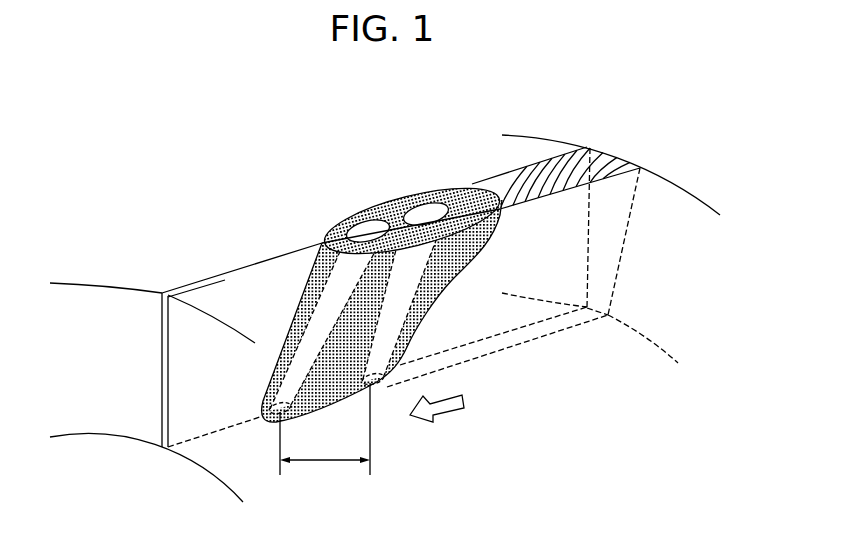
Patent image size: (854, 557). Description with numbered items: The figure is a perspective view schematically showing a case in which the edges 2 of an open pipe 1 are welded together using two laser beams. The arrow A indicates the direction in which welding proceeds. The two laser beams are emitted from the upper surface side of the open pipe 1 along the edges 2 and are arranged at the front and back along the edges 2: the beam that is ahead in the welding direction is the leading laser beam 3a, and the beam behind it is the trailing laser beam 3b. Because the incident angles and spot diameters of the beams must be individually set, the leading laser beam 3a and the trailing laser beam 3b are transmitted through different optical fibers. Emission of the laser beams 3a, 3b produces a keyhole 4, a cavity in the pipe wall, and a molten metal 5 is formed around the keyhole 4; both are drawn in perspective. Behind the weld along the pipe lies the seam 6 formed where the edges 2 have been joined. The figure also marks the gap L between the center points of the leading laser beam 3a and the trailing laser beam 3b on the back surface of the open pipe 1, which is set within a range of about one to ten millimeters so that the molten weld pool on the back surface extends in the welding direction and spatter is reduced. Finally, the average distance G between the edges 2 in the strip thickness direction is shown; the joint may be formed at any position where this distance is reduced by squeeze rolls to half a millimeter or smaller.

The open pipe 1 is at (68, 292).
The edges 2 is at (185, 292).
The leading laser beam 3a is at (408, 143).
The trailing laser beam 3b is at (450, 120).
The keyhole 4 is at (384, 266).
The molten metal 5 is at (450, 189).
The seam 6 is at (607, 150).
The average distance between the edges G is at (288, 269).
The gap between center points of the laser beams L is at (325, 429).
The welding direction A is at (444, 416).